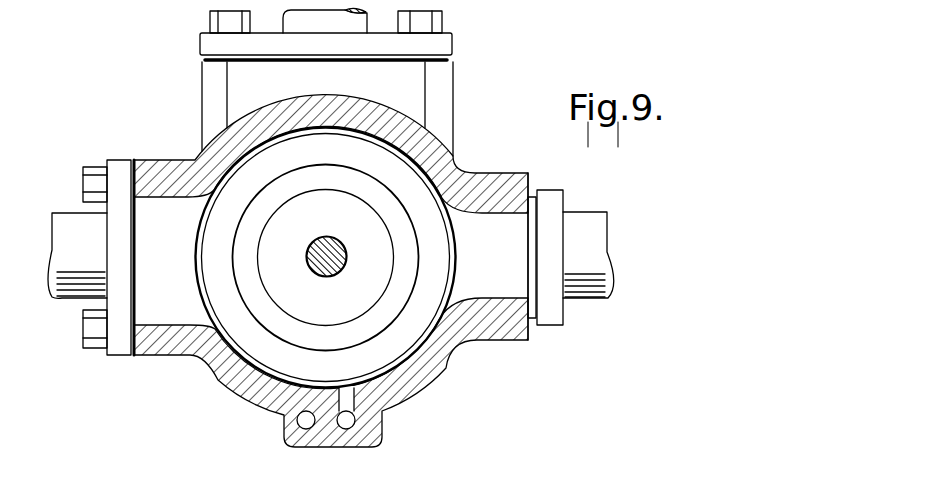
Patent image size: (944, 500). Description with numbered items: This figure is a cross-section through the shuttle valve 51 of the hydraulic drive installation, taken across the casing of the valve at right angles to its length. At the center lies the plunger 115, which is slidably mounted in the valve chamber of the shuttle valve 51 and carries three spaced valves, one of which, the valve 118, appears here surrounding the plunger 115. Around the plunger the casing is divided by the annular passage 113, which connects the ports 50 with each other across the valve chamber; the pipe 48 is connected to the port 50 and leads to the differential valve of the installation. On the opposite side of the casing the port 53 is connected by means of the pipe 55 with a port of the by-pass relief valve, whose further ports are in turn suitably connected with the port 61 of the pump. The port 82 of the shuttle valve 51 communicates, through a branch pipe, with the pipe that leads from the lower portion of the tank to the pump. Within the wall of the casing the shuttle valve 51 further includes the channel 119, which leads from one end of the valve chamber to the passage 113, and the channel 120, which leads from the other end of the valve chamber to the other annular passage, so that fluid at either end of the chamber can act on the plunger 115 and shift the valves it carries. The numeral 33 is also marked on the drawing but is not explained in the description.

The cover 33 is at (607, 10).
The pipe 48 is at (594, 240).
The port 50 is at (518, 256).
The shuttle valve 51 is at (238, 378).
The port 53 is at (156, 257).
The pipe 55 is at (75, 279).
The port 61 is at (366, 13).
The port 82 is at (400, 94).
The annular passage 113 is at (326, 258).
The plunger 115 is at (329, 238).
The valve 118 is at (378, 248).
The channel 119 is at (350, 422).
The channel 120 is at (307, 424).